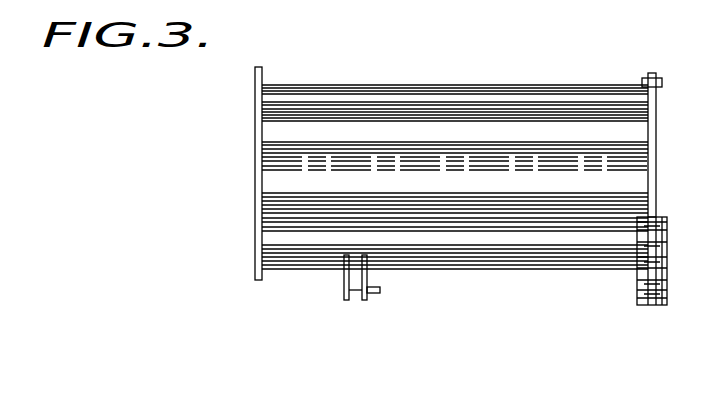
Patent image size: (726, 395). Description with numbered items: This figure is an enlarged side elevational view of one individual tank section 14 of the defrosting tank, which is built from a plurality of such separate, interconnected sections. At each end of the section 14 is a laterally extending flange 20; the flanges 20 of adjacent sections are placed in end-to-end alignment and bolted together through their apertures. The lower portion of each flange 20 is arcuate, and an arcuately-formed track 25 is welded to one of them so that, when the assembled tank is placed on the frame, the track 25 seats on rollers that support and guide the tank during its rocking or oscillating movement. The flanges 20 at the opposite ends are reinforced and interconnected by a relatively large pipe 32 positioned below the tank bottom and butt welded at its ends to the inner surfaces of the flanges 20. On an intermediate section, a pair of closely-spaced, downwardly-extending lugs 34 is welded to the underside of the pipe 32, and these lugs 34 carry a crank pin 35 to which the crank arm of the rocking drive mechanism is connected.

The tank section 14 is at (287, 174).
The flange 20 is at (255, 120).
The track 25 is at (667, 275).
The pipe 32 is at (459, 262).
The lugs 34 is at (367, 275).
The crank pin 35 is at (375, 292).